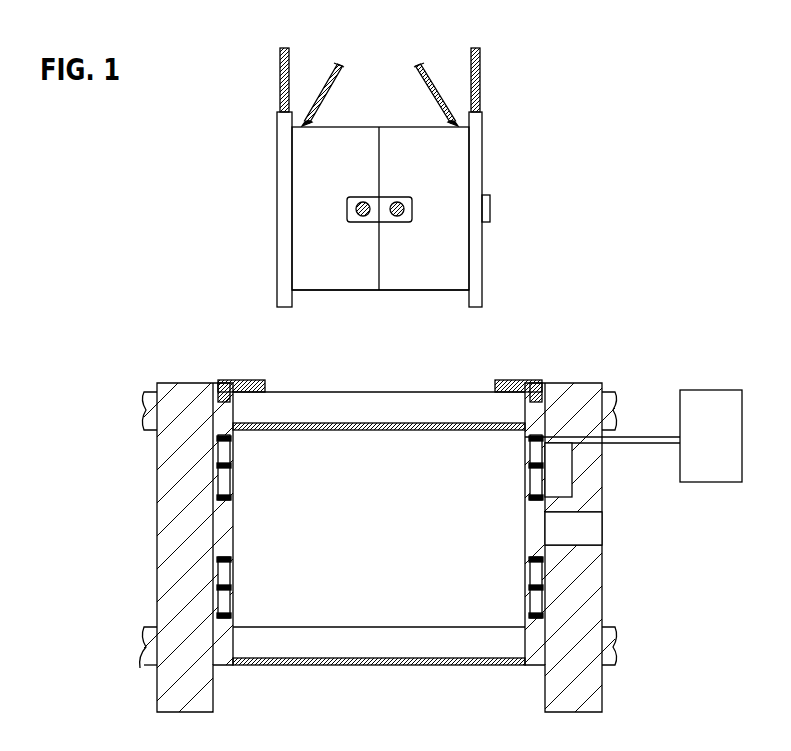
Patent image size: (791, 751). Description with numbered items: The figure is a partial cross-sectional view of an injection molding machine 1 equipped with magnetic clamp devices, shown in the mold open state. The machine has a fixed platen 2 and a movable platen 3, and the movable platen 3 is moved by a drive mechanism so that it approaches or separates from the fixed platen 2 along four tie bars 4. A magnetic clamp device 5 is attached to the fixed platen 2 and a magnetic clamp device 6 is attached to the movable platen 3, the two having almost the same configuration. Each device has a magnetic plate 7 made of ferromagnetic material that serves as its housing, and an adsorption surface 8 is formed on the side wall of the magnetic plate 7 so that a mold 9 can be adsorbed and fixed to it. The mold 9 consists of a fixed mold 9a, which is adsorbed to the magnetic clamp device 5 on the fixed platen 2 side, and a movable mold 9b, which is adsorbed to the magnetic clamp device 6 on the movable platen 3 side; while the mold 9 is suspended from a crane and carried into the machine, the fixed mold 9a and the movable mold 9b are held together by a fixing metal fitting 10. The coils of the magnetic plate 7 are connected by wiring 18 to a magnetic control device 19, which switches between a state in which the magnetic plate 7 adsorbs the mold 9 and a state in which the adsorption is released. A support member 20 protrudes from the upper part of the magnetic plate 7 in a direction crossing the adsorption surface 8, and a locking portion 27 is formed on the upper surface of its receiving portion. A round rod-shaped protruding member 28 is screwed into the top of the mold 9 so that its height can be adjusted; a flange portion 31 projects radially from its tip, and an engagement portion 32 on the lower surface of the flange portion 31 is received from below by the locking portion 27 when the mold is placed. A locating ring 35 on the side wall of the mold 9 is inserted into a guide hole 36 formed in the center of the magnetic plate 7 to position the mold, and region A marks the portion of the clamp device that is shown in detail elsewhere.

The injection molding machine 1 is at (562, 368).
The fixed platen 2 is at (570, 395).
The movable platen 3 is at (190, 383).
The tie bars 4 is at (460, 392).
The magnetic clamp device 5 is at (552, 608).
The magnetic clamp device 6 is at (208, 610).
The magnetic plate 7 is at (213, 628).
The adsorption surface 8 is at (245, 572).
The mold 9 is at (380, 262).
The fixed mold 9a is at (410, 280).
The movable mold 9b is at (348, 282).
The fixing metal fitting 10 is at (347, 201).
The wiring 18 is at (632, 437).
The magnetic control device 19 is at (724, 451).
The support member 20 is at (226, 382).
The locking portion 27 is at (258, 380).
The protruding member 28 is at (277, 105).
The flange portion 31 is at (279, 52).
The engagement portion 32 is at (328, 80).
The locating ring 35 is at (490, 208).
The guide hole 36 is at (547, 532).
The sensor A is at (580, 450).